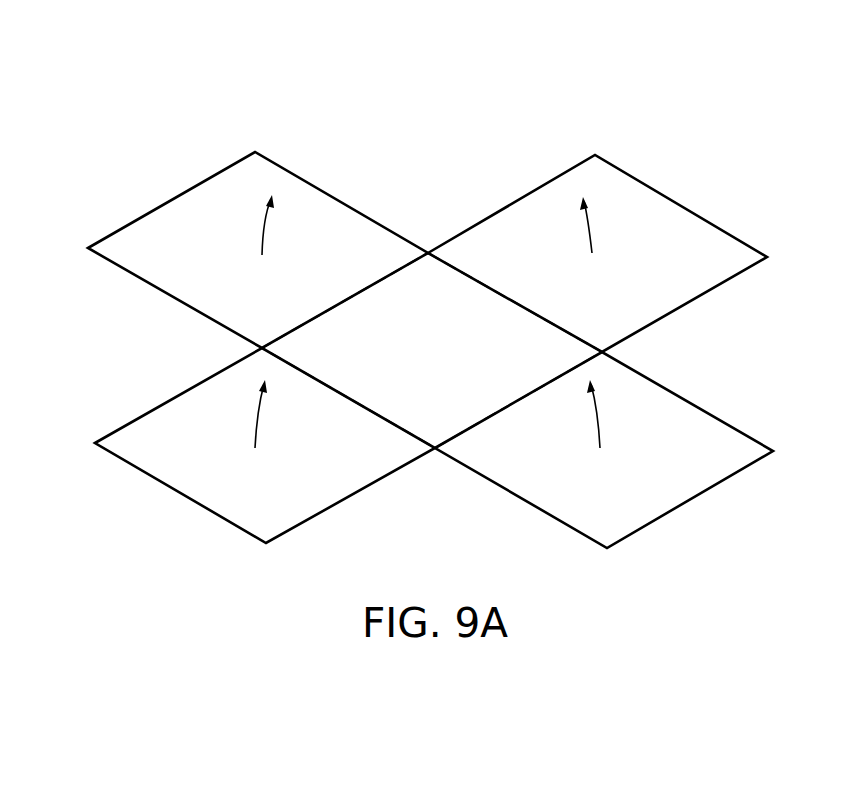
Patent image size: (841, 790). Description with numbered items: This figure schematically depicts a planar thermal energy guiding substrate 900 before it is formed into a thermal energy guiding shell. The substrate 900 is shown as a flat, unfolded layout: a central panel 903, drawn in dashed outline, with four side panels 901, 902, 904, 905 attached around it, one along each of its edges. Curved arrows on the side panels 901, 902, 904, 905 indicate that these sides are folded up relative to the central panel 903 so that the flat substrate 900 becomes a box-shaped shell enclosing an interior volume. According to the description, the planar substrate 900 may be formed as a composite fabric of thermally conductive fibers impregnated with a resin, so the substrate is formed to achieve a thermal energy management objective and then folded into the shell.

The planar thermal energy guiding substrate 900 is at (380, 196).
The first panel 901 is at (652, 205).
The second panel 902 is at (185, 208).
The central panel (hidden) 903 is at (558, 347).
The fourth panel 904 is at (728, 442).
The fifth panel 905 is at (165, 418).